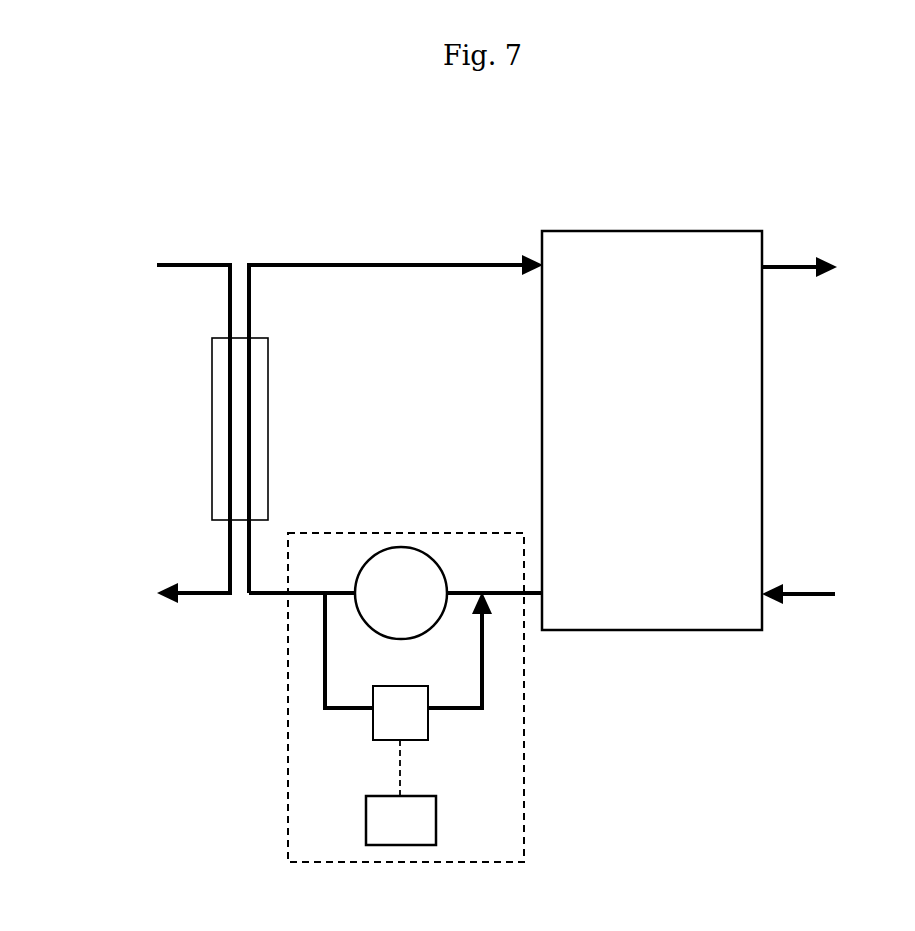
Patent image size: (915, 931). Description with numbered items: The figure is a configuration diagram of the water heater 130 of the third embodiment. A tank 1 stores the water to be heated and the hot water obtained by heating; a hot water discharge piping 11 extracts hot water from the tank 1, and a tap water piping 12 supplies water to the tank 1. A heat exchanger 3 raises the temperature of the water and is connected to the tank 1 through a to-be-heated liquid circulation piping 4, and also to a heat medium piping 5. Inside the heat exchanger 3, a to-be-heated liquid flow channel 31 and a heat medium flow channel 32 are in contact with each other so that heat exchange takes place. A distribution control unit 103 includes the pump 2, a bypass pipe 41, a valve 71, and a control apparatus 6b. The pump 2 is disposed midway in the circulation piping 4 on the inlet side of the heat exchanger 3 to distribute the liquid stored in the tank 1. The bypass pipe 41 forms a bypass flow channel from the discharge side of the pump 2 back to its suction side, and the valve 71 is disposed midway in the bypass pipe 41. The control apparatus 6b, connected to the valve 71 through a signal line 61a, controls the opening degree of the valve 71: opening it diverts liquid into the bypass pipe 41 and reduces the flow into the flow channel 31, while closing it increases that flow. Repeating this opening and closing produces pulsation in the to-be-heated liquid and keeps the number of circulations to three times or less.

The tank 1 is at (625, 231).
The pump 2 is at (398, 547).
The heat exchanger 3 is at (211, 462).
The to-be-heated liquid circulation piping 4 is at (309, 262).
The heat medium piping 5 is at (177, 262).
The hot water discharge piping 11 is at (827, 262).
The tap water piping 12 is at (820, 588).
The to-be-heated liquid flow channel 31 is at (250, 396).
The heat medium flow channel 32 is at (227, 362).
The bypass pipe 41 is at (323, 667).
The signal line 61a is at (395, 762).
The control apparatus 6b is at (436, 822).
The valve 71 is at (428, 723).
The distribution control unit 103 is at (351, 532).
The water heater 130 is at (446, 240).